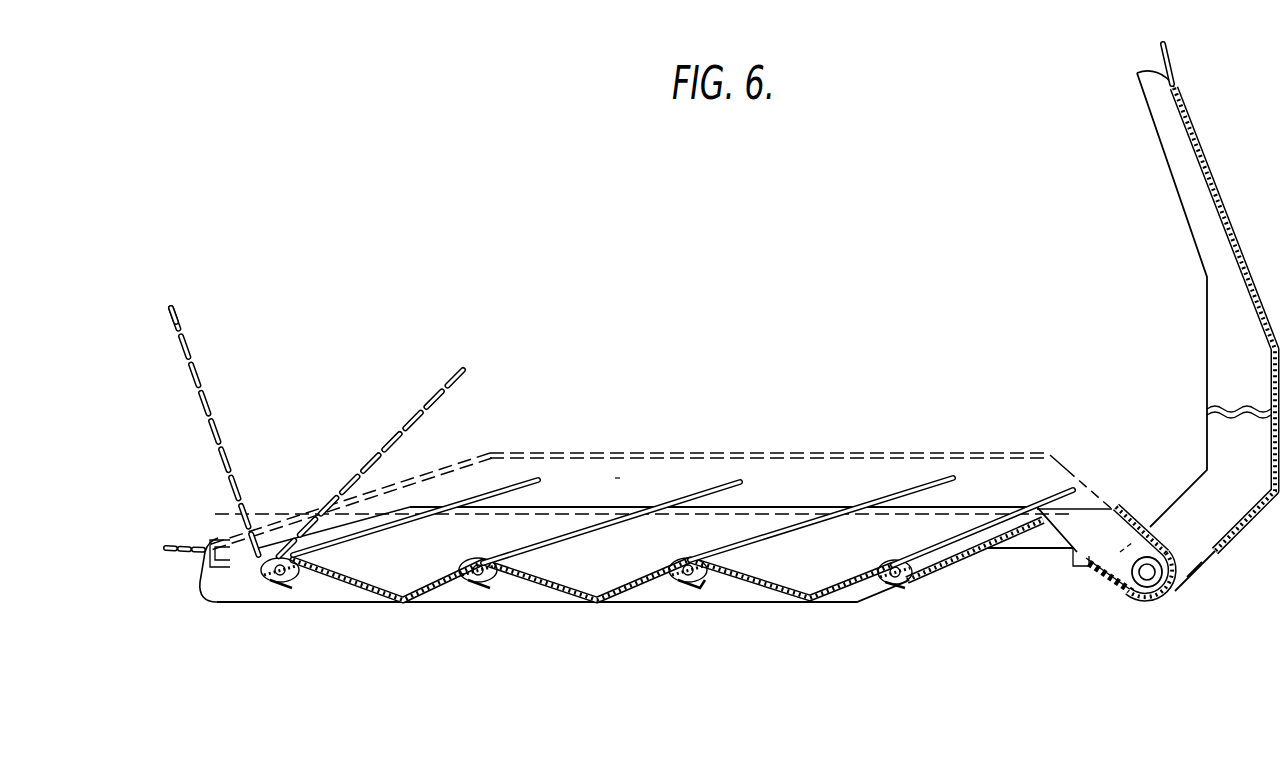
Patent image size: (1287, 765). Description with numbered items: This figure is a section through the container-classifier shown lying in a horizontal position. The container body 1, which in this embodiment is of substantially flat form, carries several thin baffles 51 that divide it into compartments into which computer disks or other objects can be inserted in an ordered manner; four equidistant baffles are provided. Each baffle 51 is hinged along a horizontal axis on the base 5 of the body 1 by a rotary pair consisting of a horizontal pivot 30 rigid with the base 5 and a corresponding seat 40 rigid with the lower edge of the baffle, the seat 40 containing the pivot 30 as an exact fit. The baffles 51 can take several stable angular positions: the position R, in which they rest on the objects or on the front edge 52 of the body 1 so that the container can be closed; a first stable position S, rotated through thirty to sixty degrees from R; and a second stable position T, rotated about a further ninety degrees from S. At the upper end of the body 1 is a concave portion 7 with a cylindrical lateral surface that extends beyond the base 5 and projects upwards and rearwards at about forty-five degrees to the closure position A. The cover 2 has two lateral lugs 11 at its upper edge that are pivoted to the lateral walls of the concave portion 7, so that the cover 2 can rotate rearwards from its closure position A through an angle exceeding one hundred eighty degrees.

The container body 1 is at (952, 572).
The cover 2 is at (1178, 198).
The base surface 5 is at (565, 593).
The concave portion 7 is at (1146, 540).
The lateral lugs 11 is at (1200, 562).
The horizontal pivot 30 is at (673, 583).
The seat 40 is at (698, 590).
The baffles 51 is at (214, 426).
The front edge 52 is at (617, 478).
The second stable position T is at (180, 303).
The first stable position S is at (462, 368).
The rest position R is at (541, 481).
The closure position A is at (800, 448).